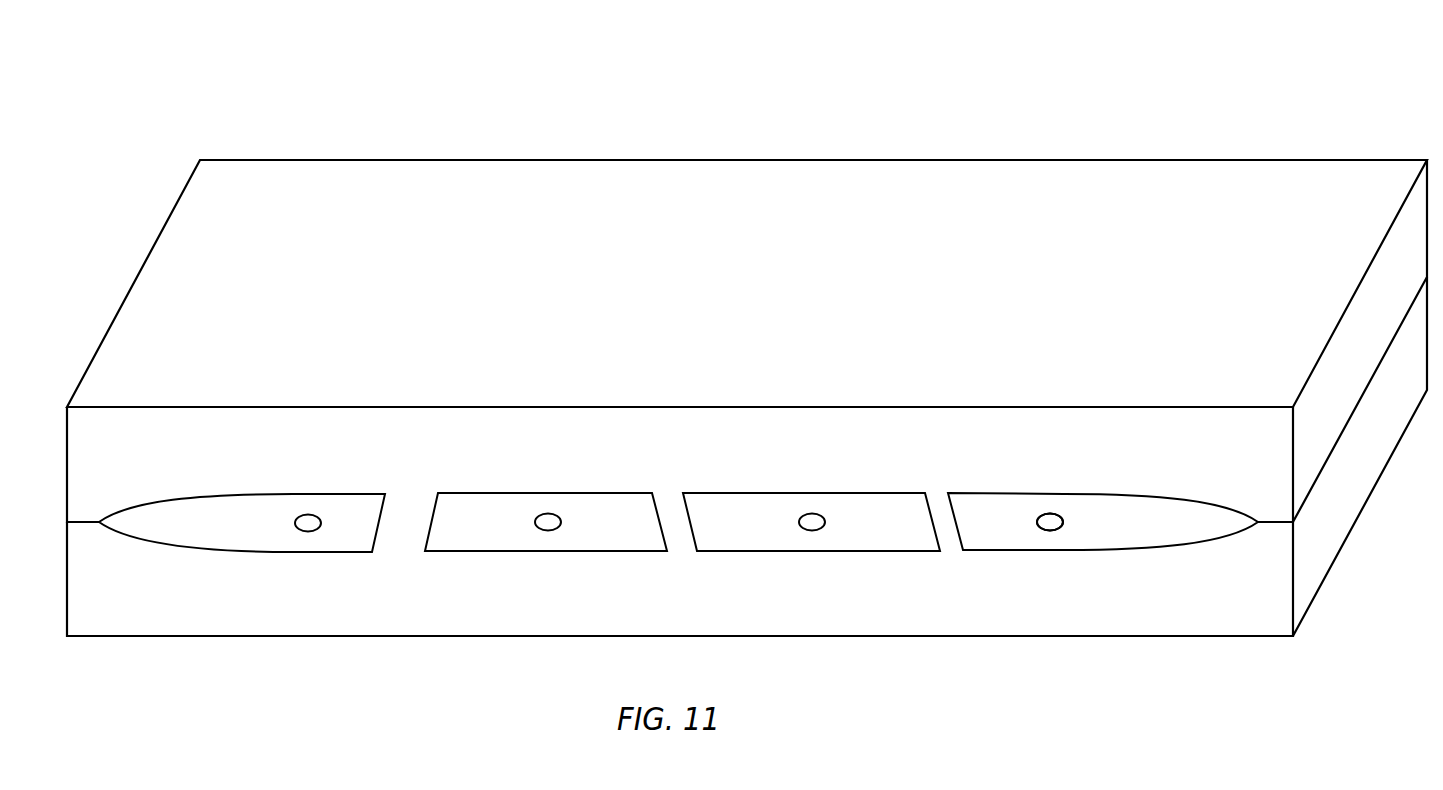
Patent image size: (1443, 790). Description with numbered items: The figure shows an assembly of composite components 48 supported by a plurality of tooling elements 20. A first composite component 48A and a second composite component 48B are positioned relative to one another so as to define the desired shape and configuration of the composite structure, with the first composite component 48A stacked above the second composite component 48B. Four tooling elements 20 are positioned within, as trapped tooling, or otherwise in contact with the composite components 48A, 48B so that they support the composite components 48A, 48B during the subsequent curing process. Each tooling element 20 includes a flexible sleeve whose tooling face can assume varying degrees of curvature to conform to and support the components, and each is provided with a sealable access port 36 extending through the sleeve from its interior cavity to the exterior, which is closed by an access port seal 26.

The composite component 48 is at (742, 364).
The first composite component 48A is at (157, 342).
The second composite component 48B is at (103, 610).
The tooling element 20 is at (350, 528).
The access port seal 26 is at (1050, 528).
The sealable access port 36 is at (1053, 516).